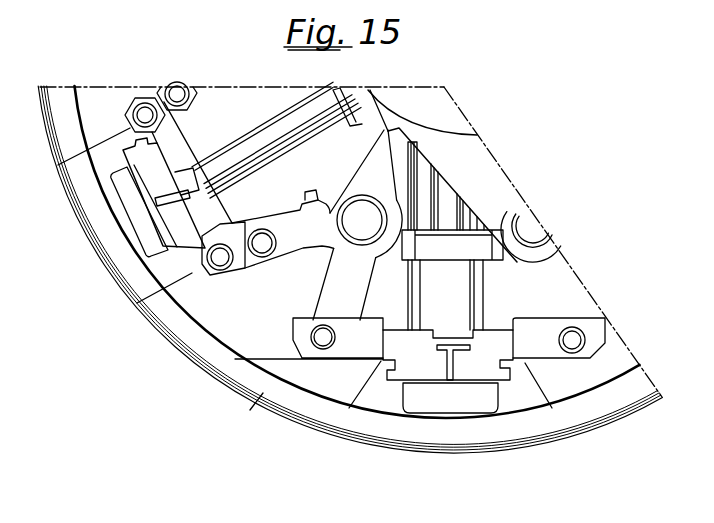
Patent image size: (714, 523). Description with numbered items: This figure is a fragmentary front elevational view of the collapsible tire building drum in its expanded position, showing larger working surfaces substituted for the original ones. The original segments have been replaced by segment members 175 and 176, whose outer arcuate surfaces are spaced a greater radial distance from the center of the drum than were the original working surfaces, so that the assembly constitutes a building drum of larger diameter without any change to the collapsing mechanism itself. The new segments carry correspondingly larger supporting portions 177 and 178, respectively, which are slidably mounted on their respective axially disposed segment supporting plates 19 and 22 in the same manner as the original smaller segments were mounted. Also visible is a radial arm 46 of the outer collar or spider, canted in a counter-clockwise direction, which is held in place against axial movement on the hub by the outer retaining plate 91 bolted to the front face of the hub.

The segment supporting plate 19 is at (158, 168).
The outer retaining plate 91 is at (422, 112).
The radial arm 46 is at (465, 176).
The segment supporting plate 22 is at (405, 342).
The segment member 175 is at (113, 258).
The supporting portion 177 is at (179, 267).
The segment member 176 is at (262, 395).
The supporting portion 178 is at (517, 405).